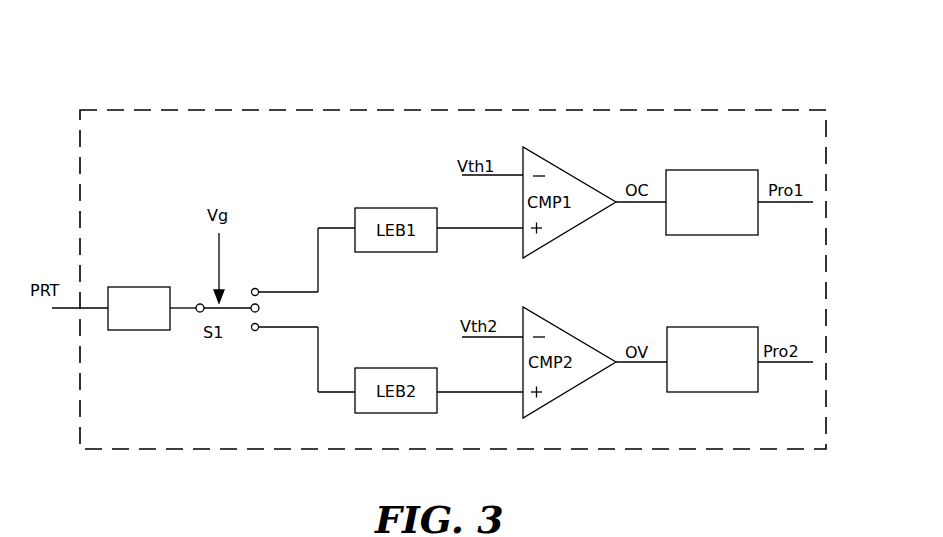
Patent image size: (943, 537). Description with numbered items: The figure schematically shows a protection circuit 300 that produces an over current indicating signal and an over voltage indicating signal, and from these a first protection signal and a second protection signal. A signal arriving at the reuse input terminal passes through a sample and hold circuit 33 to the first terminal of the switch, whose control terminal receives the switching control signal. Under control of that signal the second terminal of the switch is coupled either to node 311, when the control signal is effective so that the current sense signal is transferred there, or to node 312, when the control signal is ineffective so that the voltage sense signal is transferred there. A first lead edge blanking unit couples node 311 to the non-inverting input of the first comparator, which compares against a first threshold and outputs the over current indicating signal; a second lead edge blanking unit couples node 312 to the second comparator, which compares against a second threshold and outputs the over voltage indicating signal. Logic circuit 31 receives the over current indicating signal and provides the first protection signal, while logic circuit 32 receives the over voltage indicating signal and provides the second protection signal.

The protection circuit 300 is at (714, 80).
The sample and hold circuit 33 is at (122, 287).
The node 311 is at (273, 278).
The node 312 is at (259, 330).
The logic circuit 31 is at (687, 170).
The logic circuit 32 is at (687, 327).